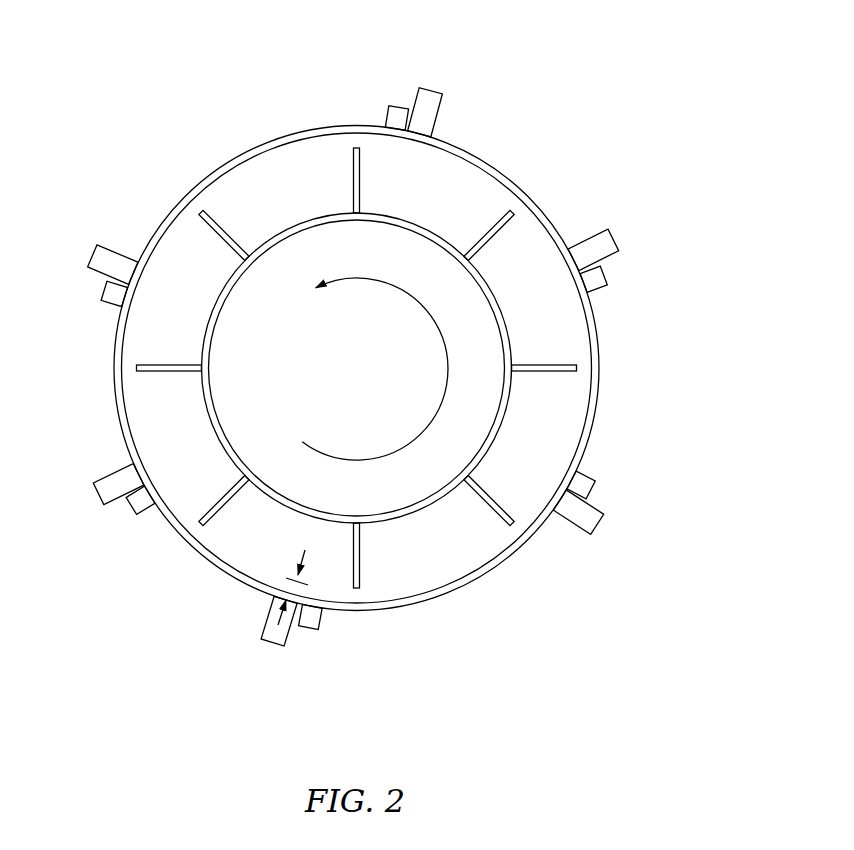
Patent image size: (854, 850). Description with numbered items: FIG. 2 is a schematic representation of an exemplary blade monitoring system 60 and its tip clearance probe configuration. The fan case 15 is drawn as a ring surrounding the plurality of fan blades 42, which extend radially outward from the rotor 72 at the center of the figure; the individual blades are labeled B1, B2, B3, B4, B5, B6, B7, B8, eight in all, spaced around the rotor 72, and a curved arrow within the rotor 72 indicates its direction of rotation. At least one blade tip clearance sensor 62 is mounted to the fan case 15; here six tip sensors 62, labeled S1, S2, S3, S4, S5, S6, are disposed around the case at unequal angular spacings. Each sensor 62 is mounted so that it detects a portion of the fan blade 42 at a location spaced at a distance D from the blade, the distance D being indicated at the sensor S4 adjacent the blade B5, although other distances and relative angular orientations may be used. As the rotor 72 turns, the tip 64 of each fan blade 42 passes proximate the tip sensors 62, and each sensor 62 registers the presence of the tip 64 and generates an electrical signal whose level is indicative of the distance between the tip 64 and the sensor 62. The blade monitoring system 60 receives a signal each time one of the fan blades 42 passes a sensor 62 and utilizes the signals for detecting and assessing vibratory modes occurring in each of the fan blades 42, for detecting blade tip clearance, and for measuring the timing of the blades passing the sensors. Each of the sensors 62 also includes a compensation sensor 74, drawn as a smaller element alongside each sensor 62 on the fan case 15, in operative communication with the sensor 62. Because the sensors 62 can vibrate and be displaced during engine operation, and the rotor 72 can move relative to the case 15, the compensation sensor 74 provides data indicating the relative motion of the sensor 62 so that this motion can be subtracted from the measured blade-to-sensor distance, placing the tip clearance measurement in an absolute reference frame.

The blade monitoring system 60 is at (222, 83).
The fan case 15 is at (517, 558).
The rotor 72 is at (346, 405).
The fan blades 42 is at (336, 166).
The blade tip clearance sensor 62 is at (449, 115).
The compensation sensor 74 is at (603, 302).
The tip 64 is at (357, 590).
The distance D is at (276, 617).
The blade 1 B1 is at (376, 180).
The blade 2 B2 is at (224, 229).
The blade 3 B3 is at (169, 351).
The blade 4 B4 is at (214, 500).
The blade 5 B5 is at (335, 555).
The blade 6 B6 is at (488, 508).
The blade 7 B7 is at (544, 387).
The blade 8 B8 is at (498, 235).
The sensor 1 S1 is at (433, 96).
The sensor 2 S2 is at (96, 262).
The sensor 3 S3 is at (104, 492).
The sensor 4 S4 is at (276, 639).
The sensor 5 S5 is at (592, 521).
The sensor 6 S6 is at (606, 243).